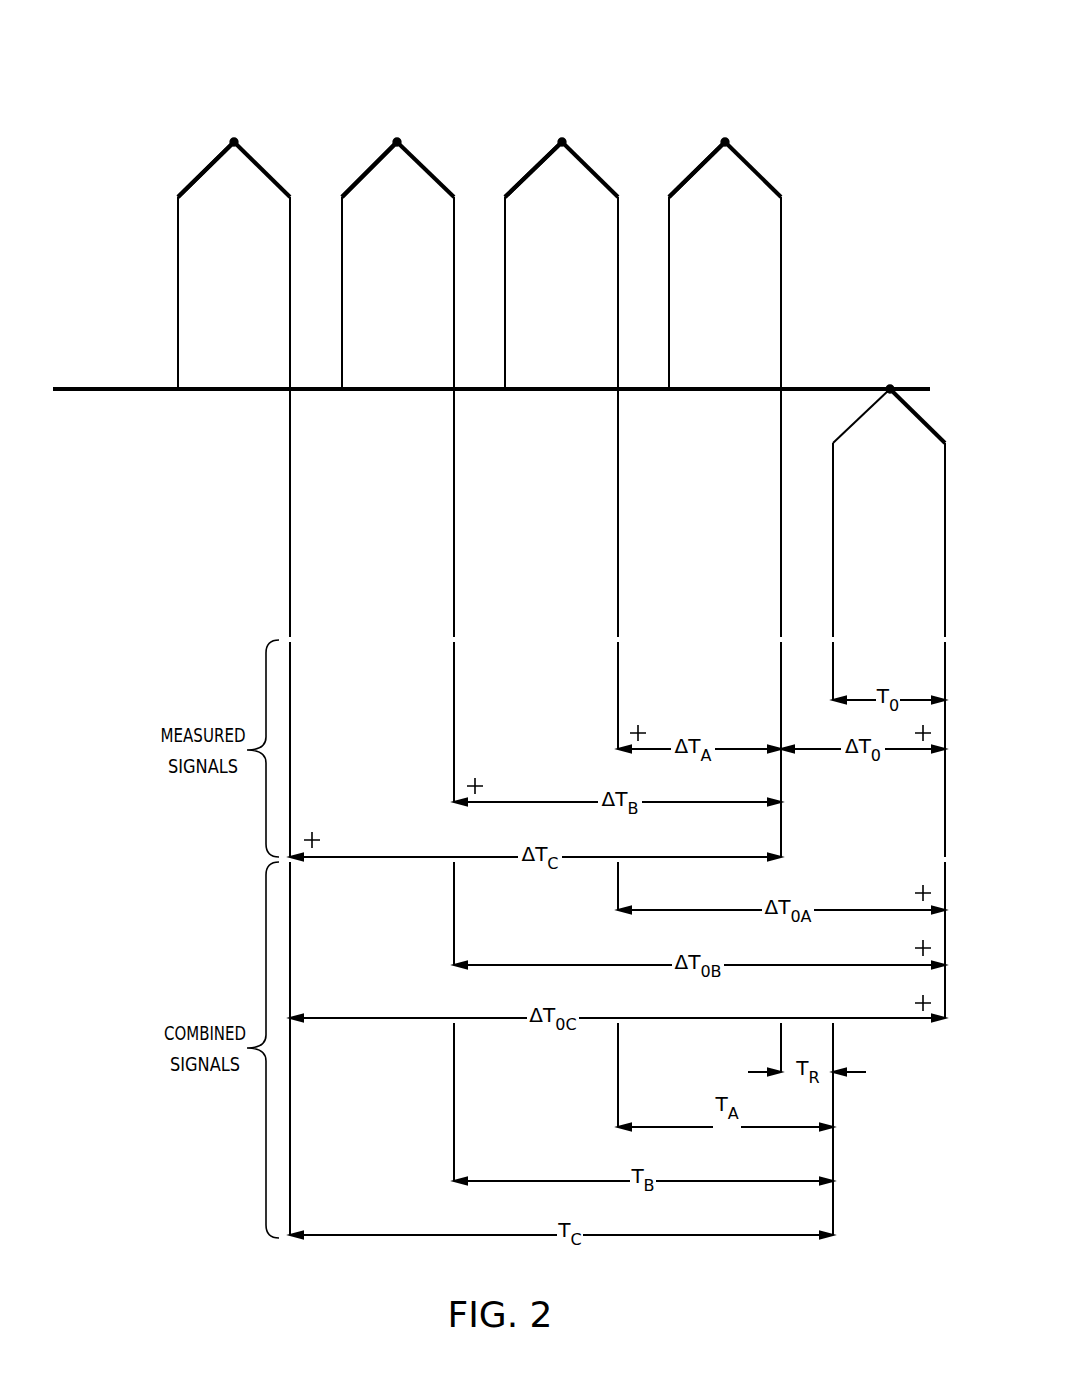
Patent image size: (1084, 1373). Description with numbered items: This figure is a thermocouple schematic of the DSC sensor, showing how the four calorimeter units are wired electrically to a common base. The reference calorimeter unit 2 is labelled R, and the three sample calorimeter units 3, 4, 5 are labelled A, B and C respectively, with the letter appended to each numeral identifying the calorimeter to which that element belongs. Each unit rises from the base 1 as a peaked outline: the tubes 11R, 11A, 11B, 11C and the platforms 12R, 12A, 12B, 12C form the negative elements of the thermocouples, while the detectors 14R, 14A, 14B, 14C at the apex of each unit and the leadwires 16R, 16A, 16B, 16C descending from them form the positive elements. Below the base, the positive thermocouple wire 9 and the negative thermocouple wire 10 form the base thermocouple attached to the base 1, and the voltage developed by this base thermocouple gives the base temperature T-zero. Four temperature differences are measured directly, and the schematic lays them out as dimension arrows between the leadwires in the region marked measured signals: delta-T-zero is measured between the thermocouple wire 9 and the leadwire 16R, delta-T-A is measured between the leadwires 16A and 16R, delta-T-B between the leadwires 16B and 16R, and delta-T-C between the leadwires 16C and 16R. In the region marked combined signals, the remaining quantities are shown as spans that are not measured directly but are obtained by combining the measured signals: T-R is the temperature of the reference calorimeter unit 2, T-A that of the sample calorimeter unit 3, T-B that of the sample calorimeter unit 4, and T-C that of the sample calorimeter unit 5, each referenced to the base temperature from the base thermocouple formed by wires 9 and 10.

The base 1 is at (101, 392).
The reference calorimeter unit 2 is at (701, 201).
The sample calorimeter unit 3 is at (538, 201).
The sample calorimeter unit 4 is at (375, 201).
The sample calorimeter unit 5 is at (211, 201).
The positive thermocouple wire 9 is at (945, 571).
The negative thermocouple wire 10 is at (833, 494).
The tube 11C is at (203, 171).
The platform 12C is at (184, 169).
The tube 11B is at (367, 171).
The platform 12B is at (348, 169).
The tube 11A is at (530, 171).
The platform 12A is at (512, 169).
The tube 11R is at (694, 171).
The platform 12R is at (675, 169).
The detector 14C is at (230, 141).
The detector 14B is at (393, 141).
The detector 14A is at (558, 141).
The detector 14R is at (721, 141).
The leadwire 16C is at (290, 590).
The leadwire 16B is at (454, 590).
The leadwire 16A is at (618, 590).
The leadwire 16R is at (781, 590).